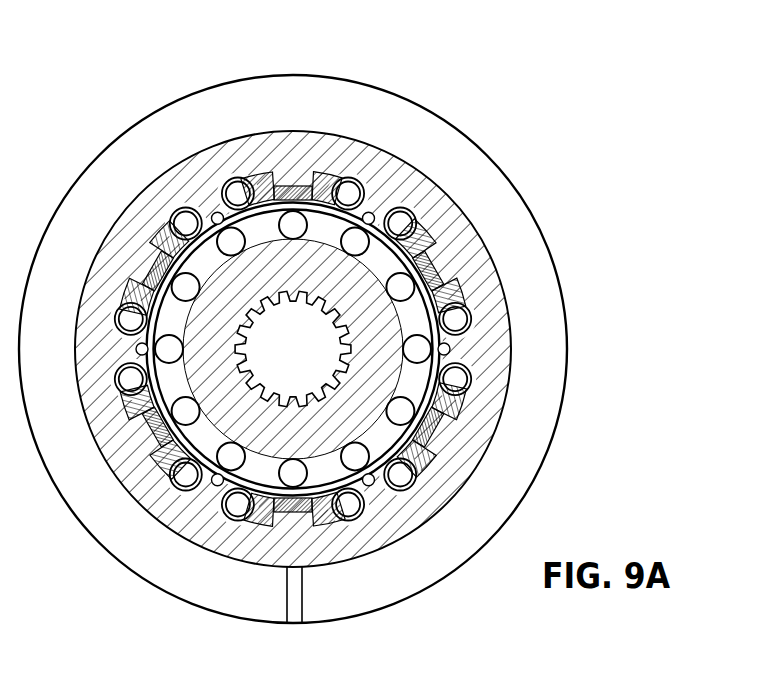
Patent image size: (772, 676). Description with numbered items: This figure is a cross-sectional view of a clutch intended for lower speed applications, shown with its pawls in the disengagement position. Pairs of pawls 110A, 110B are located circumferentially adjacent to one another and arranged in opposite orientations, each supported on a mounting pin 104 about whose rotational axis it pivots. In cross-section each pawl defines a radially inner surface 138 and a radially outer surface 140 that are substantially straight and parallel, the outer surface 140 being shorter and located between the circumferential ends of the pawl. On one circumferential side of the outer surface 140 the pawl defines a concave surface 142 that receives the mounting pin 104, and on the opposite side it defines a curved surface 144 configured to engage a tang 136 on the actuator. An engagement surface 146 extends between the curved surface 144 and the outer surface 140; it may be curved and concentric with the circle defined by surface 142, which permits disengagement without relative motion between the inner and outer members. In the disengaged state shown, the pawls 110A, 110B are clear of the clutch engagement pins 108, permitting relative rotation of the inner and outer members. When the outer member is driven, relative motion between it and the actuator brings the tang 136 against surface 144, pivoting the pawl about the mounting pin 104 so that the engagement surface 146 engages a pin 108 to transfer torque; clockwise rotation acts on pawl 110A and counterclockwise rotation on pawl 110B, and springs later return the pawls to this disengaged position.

The mounting pin 104 is at (244, 177).
The clutch engagement pin 108 is at (428, 188).
The pawl 110A is at (274, 195).
The pawl 110B is at (392, 142).
The tang 136 is at (266, 194).
The radially inner surface 138 is at (272, 226).
The radially outer surface 140 is at (258, 182).
The concave surface 142 is at (240, 200).
The curved surface 144 is at (298, 178).
The engagement surface 146 is at (328, 193).